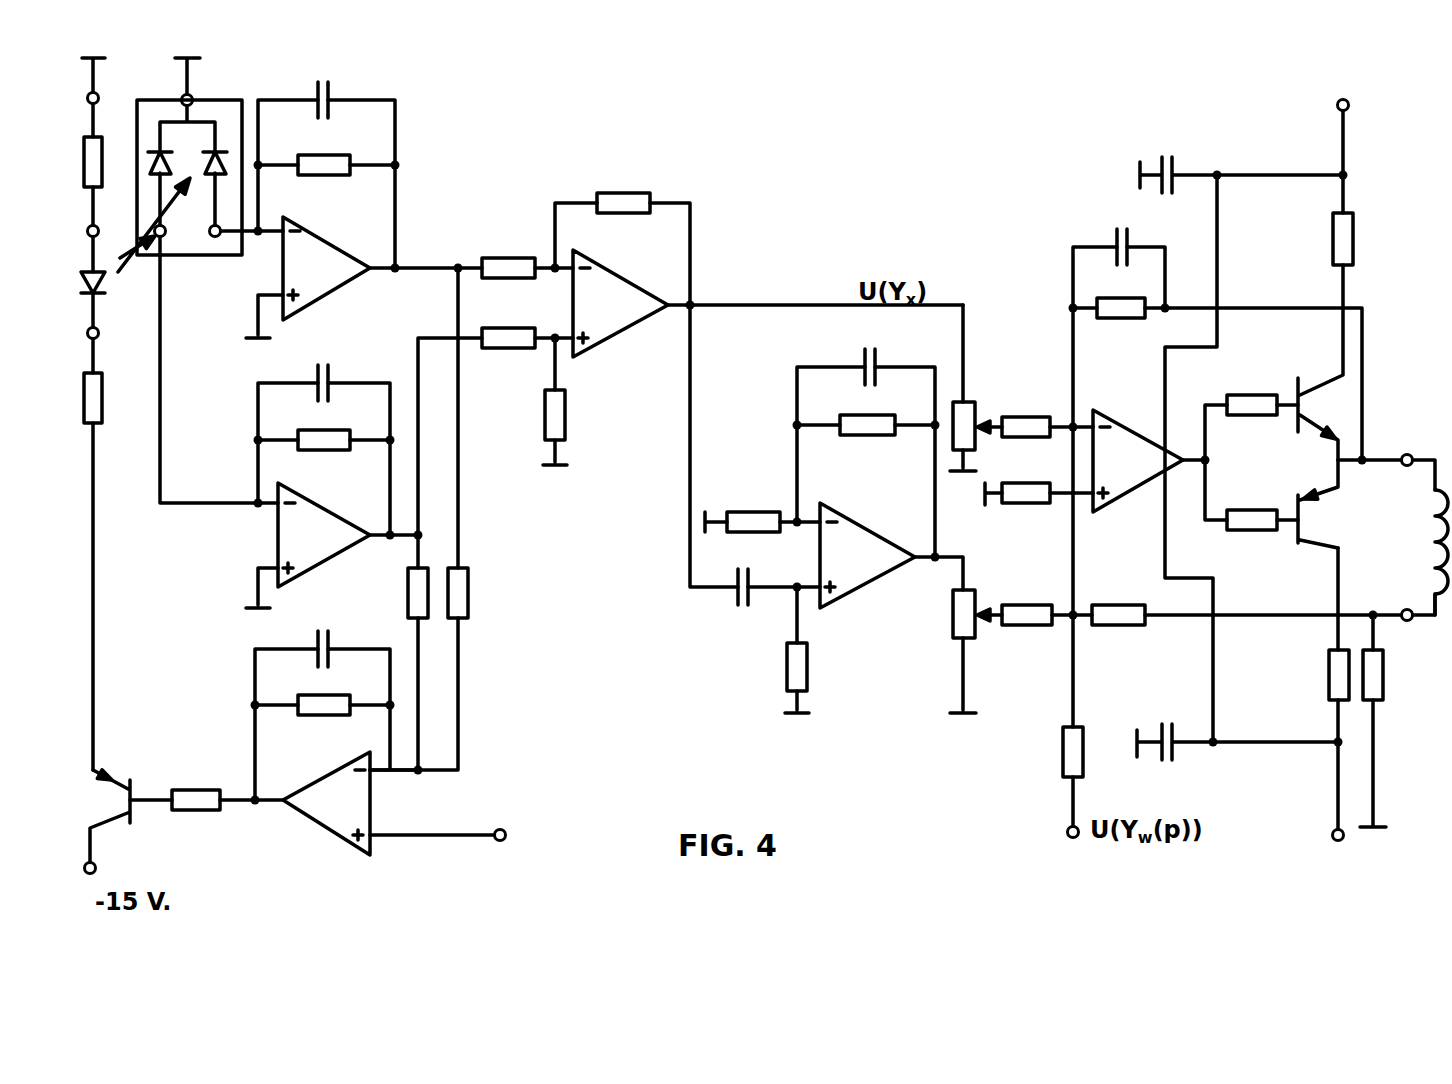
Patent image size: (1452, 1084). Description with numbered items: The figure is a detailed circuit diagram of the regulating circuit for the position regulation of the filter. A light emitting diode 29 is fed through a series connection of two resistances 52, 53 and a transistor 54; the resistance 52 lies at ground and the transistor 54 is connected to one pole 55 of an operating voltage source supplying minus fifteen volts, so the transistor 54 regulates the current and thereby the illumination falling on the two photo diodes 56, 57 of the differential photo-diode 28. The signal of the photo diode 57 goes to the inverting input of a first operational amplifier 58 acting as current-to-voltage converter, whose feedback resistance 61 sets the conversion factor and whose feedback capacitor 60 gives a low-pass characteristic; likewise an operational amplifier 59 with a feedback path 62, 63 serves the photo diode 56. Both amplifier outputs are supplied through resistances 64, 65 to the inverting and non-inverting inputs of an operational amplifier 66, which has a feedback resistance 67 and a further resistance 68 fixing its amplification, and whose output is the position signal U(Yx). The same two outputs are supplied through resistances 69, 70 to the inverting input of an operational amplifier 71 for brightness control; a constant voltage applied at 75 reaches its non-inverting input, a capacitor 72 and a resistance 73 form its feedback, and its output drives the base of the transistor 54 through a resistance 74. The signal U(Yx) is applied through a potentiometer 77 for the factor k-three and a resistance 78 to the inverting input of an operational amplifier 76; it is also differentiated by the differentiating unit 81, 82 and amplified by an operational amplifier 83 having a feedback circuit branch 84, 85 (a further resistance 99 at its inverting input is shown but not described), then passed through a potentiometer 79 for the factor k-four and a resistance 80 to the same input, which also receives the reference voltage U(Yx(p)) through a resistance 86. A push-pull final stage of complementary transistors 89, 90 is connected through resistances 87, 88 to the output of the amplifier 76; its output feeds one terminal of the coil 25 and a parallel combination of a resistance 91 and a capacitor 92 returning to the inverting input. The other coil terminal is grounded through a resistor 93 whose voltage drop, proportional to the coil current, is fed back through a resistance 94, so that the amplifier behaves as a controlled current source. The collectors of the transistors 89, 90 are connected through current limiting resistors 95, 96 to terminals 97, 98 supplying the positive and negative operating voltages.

The coil 25 is at (1402, 551).
The differential photo-diode 28 is at (188, 160).
The light emitting diode 29 is at (135, 242).
The resistance 52 is at (110, 149).
The resistance 53 is at (112, 396).
The transistor 54 is at (112, 804).
The pole of operating voltage source 55 is at (111, 869).
The photo diode 56 is at (151, 179).
The photo diode 57 is at (225, 179).
The first operational amplifier 58 is at (326, 266).
The operational amplifier 59 is at (324, 534).
The capacitor 60 is at (344, 93).
The feedback resistance 61 is at (333, 151).
The feedback capacitor 62 is at (343, 376).
The feedback resistance 63 is at (331, 430).
The resistance 64 is at (510, 253).
The resistance 65 is at (510, 325).
The operational amplifier 66 is at (620, 302).
The feedback resistance 67 is at (627, 189).
The resistance 68 is at (576, 415).
The resistance 69 is at (403, 589).
The resistance 70 is at (477, 589).
The operational amplifier 71 is at (326, 801).
The capacitor 72 is at (342, 642).
The resistance 73 is at (330, 693).
The resistance 74 is at (200, 786).
The constant voltage input 75 is at (520, 837).
The operational amplifier 76 is at (1138, 452).
The potentiometer 77 is at (978, 411).
The resistance 78 is at (1032, 413).
The potentiometer 79 is at (954, 613).
The resistance 80 is at (1032, 601).
The differentiating unit 81 is at (764, 581).
The differentiating unit 82 is at (817, 665).
The operational amplifier 83 is at (867, 555).
The resistance 84 is at (872, 412).
The feedback circuit branch element 85 is at (890, 360).
The resistance 86 is at (1055, 751).
The resistance 87 is at (1257, 390).
The resistance 88 is at (1255, 506).
The transistor 89 is at (1321, 404).
The transistor 90 is at (1318, 520).
The resistance 91 is at (1128, 295).
The capacitor 92 is at (1143, 241).
The resistor 93 is at (1394, 674).
The resistance 94 is at (1122, 601).
The current limiting resistor 95 is at (1363, 238).
The current limiting resistor 96 is at (1319, 674).
The terminal 97 is at (1324, 105).
The terminal 98 is at (1319, 837).
The resistor 99 is at (753, 509).